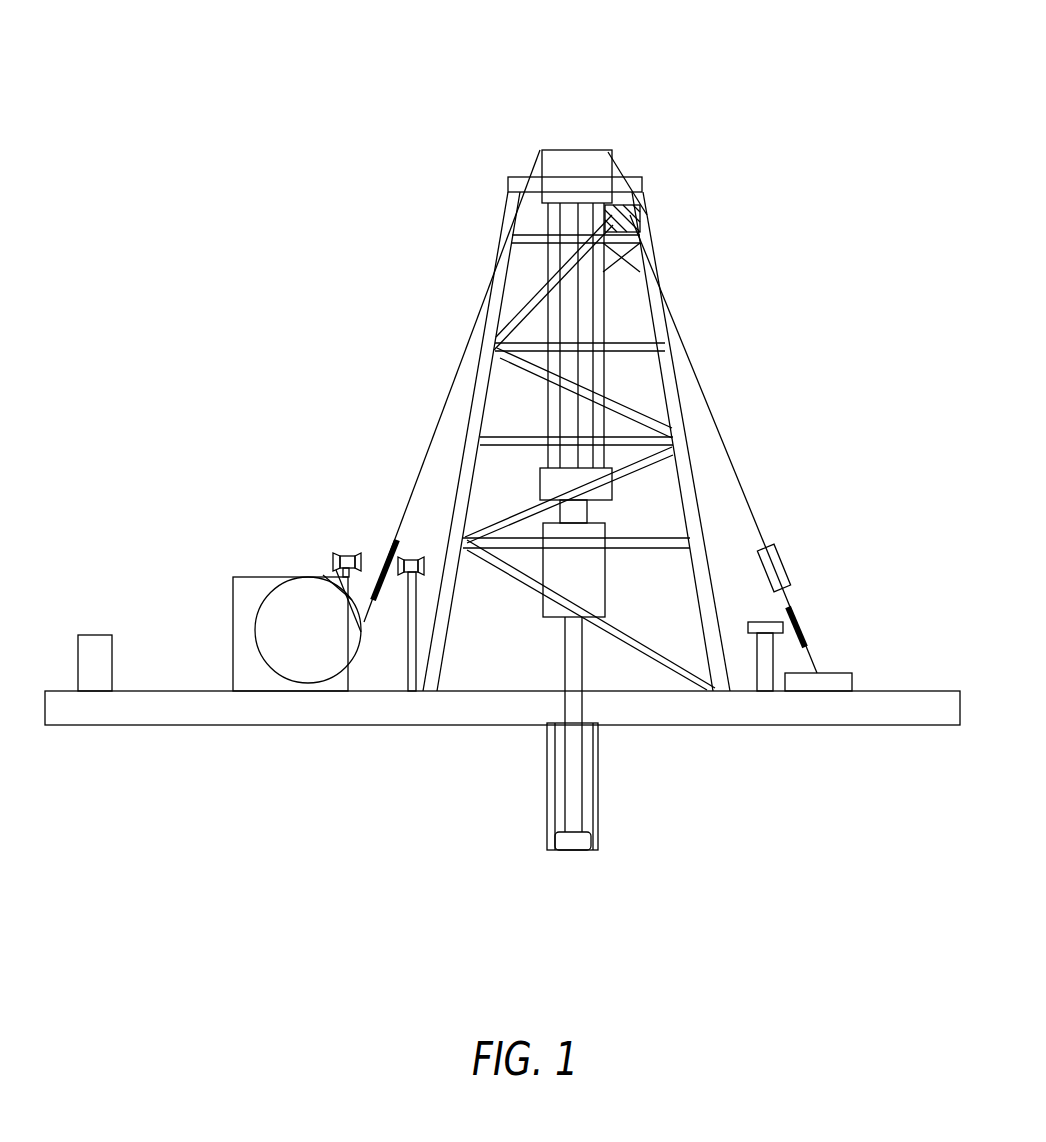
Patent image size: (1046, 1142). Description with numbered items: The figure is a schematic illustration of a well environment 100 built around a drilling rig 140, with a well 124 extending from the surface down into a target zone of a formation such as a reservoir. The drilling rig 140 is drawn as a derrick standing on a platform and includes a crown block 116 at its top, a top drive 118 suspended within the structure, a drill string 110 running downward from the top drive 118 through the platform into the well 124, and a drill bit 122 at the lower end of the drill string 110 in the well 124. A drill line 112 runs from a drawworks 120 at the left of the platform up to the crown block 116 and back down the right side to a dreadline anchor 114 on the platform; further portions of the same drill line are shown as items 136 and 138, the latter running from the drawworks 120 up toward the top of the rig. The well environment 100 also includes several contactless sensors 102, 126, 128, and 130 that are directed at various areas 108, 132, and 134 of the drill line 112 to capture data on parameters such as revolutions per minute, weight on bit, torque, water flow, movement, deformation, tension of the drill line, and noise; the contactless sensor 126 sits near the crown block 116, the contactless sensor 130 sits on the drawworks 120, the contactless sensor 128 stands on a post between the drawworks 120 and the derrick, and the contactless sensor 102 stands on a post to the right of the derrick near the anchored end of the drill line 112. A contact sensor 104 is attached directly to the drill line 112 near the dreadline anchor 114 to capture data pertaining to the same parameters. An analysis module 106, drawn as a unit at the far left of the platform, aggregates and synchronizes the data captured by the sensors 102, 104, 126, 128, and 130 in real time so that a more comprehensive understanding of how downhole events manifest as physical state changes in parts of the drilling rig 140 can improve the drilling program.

The well environment 100 is at (287, 38).
The contactless sensor 102 is at (780, 624).
The contact sensor 104 is at (783, 558).
The analysis module 106 is at (101, 634).
The area of the drill line 108 is at (801, 617).
The drill string 110 is at (563, 647).
The drill line 112 is at (729, 454).
The dreadline anchor 114 is at (833, 672).
The crown block 116 is at (578, 150).
The top drive 118 is at (607, 565).
The drawworks 120 is at (264, 576).
The drill bit 122 is at (590, 840).
The well 124 is at (598, 796).
The contactless sensor 126 is at (630, 215).
The contactless sensor 128 is at (410, 558).
The contactless sensor 130 is at (339, 556).
The area of the drill line 132 is at (640, 227).
The area of the drill line 134 is at (392, 548).
The drill line 136 is at (660, 273).
The drill line 138 is at (415, 492).
The drilling rig 140 is at (452, 296).